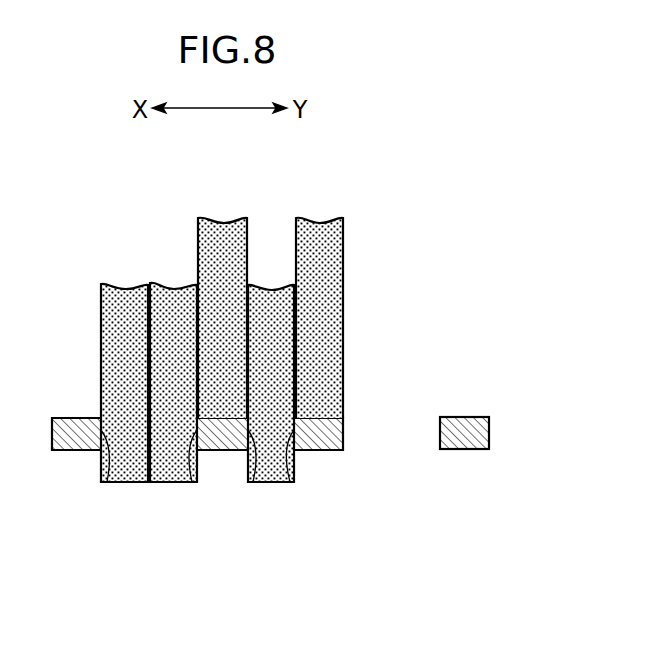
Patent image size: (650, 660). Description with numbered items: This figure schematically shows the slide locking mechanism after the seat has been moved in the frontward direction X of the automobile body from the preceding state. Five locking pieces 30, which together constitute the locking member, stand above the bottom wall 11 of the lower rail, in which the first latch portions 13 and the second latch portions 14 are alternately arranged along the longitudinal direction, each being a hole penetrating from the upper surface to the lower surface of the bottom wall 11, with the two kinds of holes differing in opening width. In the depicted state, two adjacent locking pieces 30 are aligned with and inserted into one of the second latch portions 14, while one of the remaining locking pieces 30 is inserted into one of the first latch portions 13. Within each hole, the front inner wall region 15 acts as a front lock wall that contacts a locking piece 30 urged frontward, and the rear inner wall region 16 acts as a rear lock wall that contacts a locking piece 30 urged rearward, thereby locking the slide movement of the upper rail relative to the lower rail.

The bottom wall 11 is at (467, 420).
The first latch portion 13 is at (296, 456).
The second latch portion 14 is at (101, 456).
The front inner wall region 15 is at (107, 482).
The rear inner wall region 16 is at (192, 482).
The locking piece 30 is at (127, 290).